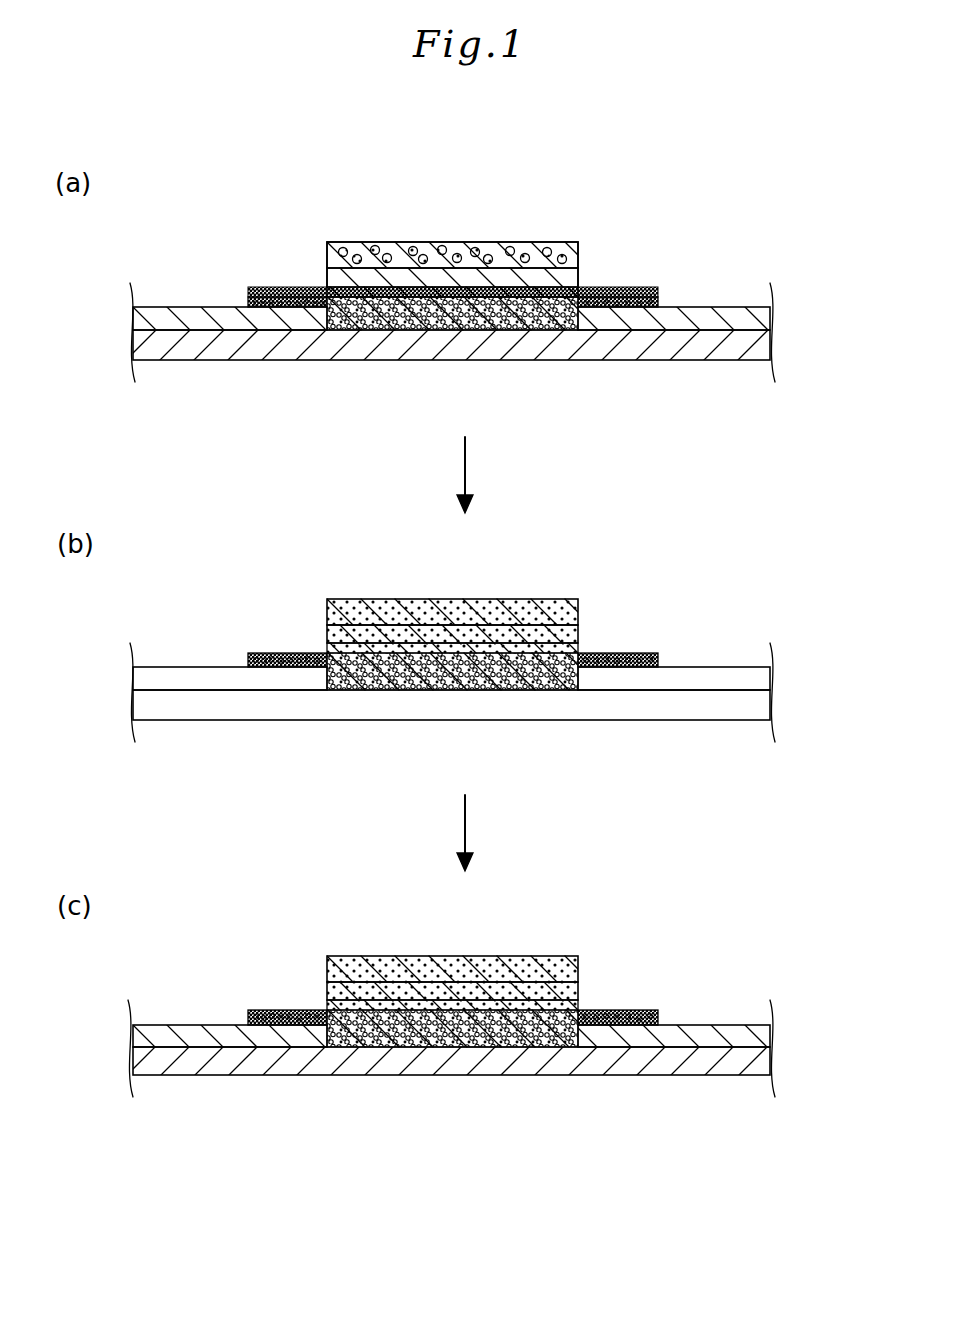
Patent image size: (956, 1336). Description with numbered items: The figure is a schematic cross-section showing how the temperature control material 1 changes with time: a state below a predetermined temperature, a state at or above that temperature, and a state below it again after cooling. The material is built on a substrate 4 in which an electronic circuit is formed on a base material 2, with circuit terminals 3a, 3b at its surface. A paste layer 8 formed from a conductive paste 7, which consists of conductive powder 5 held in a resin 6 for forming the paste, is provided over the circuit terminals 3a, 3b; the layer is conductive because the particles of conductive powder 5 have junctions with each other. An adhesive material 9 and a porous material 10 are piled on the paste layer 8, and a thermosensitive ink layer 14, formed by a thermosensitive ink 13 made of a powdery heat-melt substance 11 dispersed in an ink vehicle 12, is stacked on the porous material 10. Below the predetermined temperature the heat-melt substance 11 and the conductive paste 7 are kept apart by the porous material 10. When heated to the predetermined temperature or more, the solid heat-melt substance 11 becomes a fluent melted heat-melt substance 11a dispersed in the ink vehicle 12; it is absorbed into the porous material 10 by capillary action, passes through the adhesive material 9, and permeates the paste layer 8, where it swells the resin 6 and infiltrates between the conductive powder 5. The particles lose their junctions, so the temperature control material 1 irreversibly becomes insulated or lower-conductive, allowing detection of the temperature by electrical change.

The temperature control material 1 is at (740, 391).
The base material 2 is at (758, 350).
The circuit terminal 3a is at (758, 320).
The circuit terminal 3b is at (147, 323).
The substrate 4 is at (867, 303).
The conductive powder 5 is at (258, 297).
The resin for forming the paste 6 is at (253, 302).
The conductive paste 7 is at (183, 250).
The paste layer 8 is at (640, 298).
The adhesive material 9 is at (572, 290).
The porous material 10 is at (350, 277).
The heat-melt substance 11 is at (553, 257).
The melted heat-melt substance 11a is at (513, 685).
The ink vehicle 12 is at (537, 247).
The thermosensitive ink 13 is at (660, 198).
The thermosensitive ink layer 14 is at (347, 241).